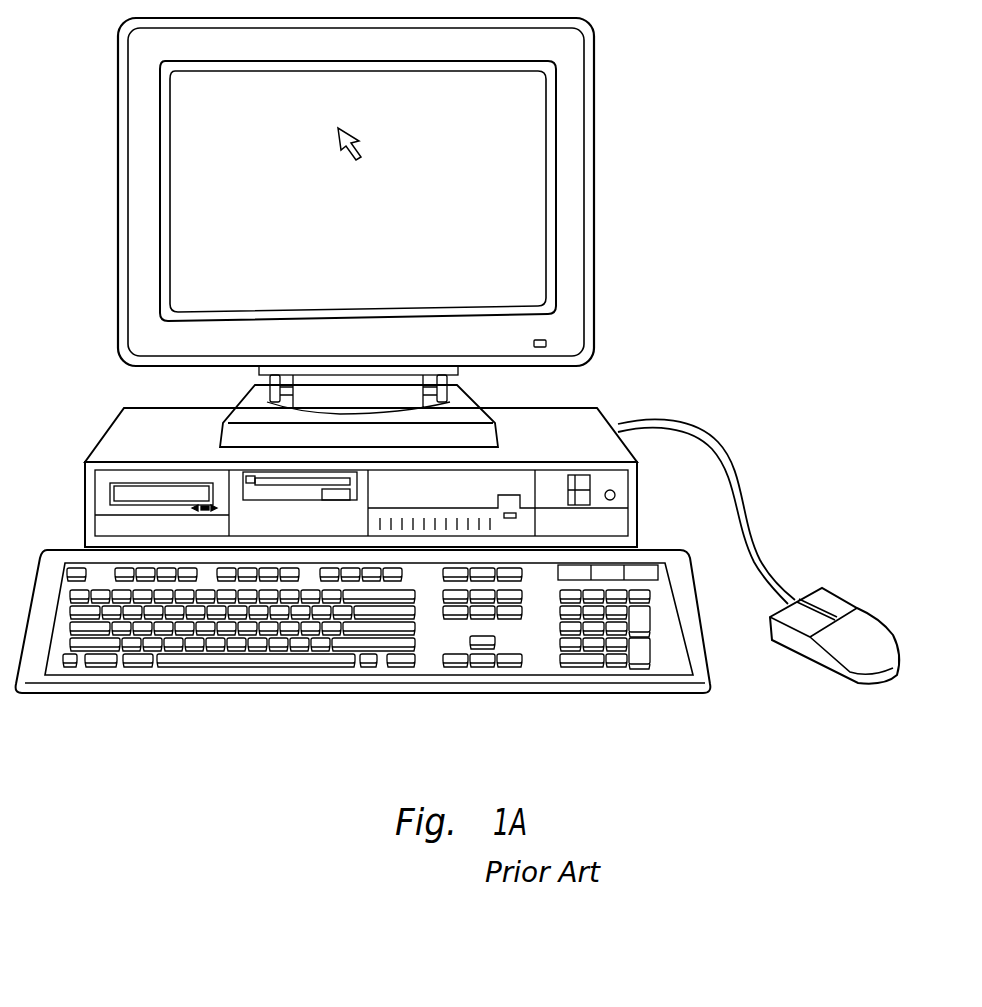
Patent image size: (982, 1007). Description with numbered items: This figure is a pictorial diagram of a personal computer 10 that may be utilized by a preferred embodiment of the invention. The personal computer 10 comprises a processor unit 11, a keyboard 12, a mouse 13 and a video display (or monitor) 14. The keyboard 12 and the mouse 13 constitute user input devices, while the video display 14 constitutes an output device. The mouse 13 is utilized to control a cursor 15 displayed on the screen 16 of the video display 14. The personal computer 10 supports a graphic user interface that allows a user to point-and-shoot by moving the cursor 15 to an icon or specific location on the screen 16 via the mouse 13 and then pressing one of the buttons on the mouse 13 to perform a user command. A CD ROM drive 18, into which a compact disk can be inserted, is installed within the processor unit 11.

The personal computer 10 is at (766, 261).
The processor unit 11 is at (105, 432).
The keyboard 12 is at (203, 695).
The mouse 13 is at (845, 598).
The video display 14 is at (594, 176).
The cursor 15 is at (350, 135).
The screen 16 is at (373, 231).
The CD ROM drive 18 is at (110, 494).